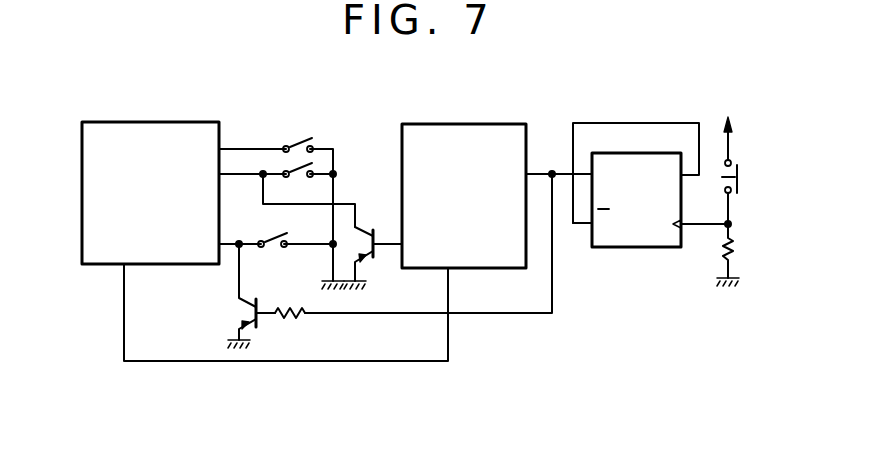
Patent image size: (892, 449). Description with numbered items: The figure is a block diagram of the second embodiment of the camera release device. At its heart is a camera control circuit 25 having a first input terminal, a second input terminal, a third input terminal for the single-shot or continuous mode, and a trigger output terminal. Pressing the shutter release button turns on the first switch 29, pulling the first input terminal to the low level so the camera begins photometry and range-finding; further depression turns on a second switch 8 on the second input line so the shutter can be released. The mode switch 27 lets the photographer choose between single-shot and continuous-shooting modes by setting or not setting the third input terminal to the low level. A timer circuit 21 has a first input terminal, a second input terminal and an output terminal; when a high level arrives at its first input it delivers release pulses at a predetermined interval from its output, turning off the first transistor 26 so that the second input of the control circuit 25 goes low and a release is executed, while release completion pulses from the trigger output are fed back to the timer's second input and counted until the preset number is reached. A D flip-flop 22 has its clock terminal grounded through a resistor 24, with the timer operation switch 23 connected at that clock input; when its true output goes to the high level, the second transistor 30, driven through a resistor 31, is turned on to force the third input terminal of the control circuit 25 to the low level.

The camera control circuit 25 is at (121, 128).
The timer circuit 21 is at (445, 130).
The D flip-flop 22 is at (636, 152).
The timer operation switch 23 is at (745, 170).
The resistor 24 is at (745, 251).
The first transistor 26 is at (369, 231).
The S/C mode switch 27 is at (267, 230).
The first switch 29 is at (297, 133).
The switch 8 is at (298, 182).
The second transistor 30 is at (259, 306).
The resistor 31 is at (292, 316).